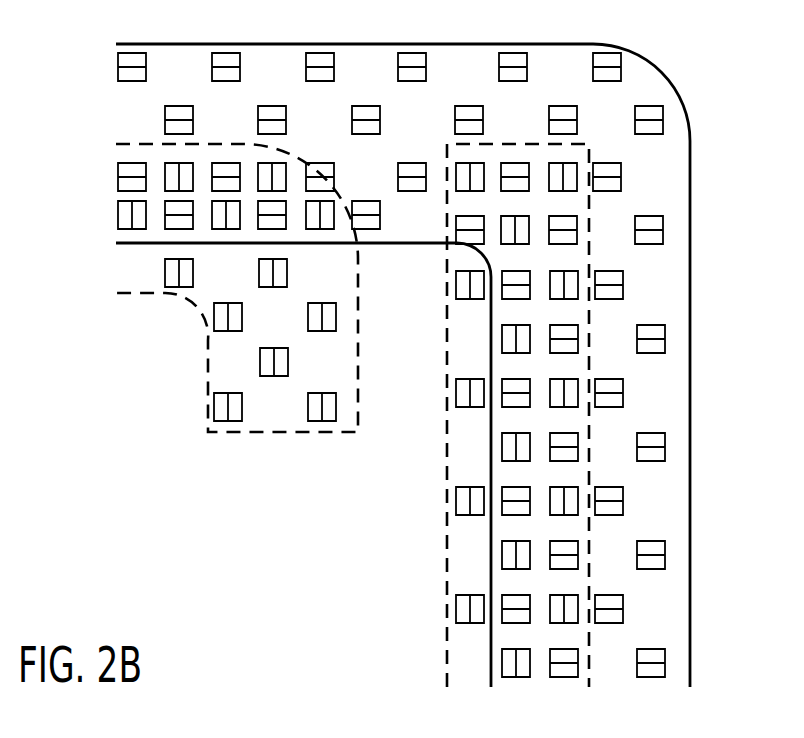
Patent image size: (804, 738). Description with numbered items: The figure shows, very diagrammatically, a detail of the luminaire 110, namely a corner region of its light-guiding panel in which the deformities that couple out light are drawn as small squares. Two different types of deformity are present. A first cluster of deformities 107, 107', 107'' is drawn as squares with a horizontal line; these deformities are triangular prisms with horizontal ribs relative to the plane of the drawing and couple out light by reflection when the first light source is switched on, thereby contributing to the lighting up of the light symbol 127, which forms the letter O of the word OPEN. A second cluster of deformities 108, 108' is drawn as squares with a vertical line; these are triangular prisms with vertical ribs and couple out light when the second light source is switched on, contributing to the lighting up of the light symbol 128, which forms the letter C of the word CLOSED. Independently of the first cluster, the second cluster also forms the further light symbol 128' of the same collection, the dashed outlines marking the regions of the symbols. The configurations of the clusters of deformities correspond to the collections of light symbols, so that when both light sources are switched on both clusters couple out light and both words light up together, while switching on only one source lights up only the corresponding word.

The light symbol 127 is at (416, 44).
The deformity 107 is at (693, 221).
The deformity 107' is at (696, 329).
The deformity 107'' is at (697, 437).
The deformity 108 is at (234, 444).
The deformity 108' is at (315, 444).
The light symbol 128 is at (237, 288).
The light symbol 128' is at (479, 415).
The luminaire 110 is at (250, 629).